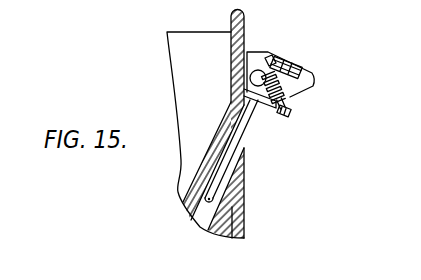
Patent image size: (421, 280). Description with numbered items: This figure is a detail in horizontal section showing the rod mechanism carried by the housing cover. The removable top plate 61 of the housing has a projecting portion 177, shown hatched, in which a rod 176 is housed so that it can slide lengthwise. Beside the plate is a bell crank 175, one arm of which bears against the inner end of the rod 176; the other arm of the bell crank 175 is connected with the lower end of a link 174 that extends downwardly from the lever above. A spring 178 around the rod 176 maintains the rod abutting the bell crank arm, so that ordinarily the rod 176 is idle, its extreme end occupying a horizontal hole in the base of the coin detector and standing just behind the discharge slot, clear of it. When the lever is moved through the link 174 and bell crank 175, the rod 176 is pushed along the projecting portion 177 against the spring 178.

The removable plate 61 is at (205, 135).
The link 174 is at (292, 113).
The bell crank 175 is at (297, 95).
The rod 176 is at (243, 150).
The projecting portion 177 is at (224, 125).
The spring 178 is at (275, 56).